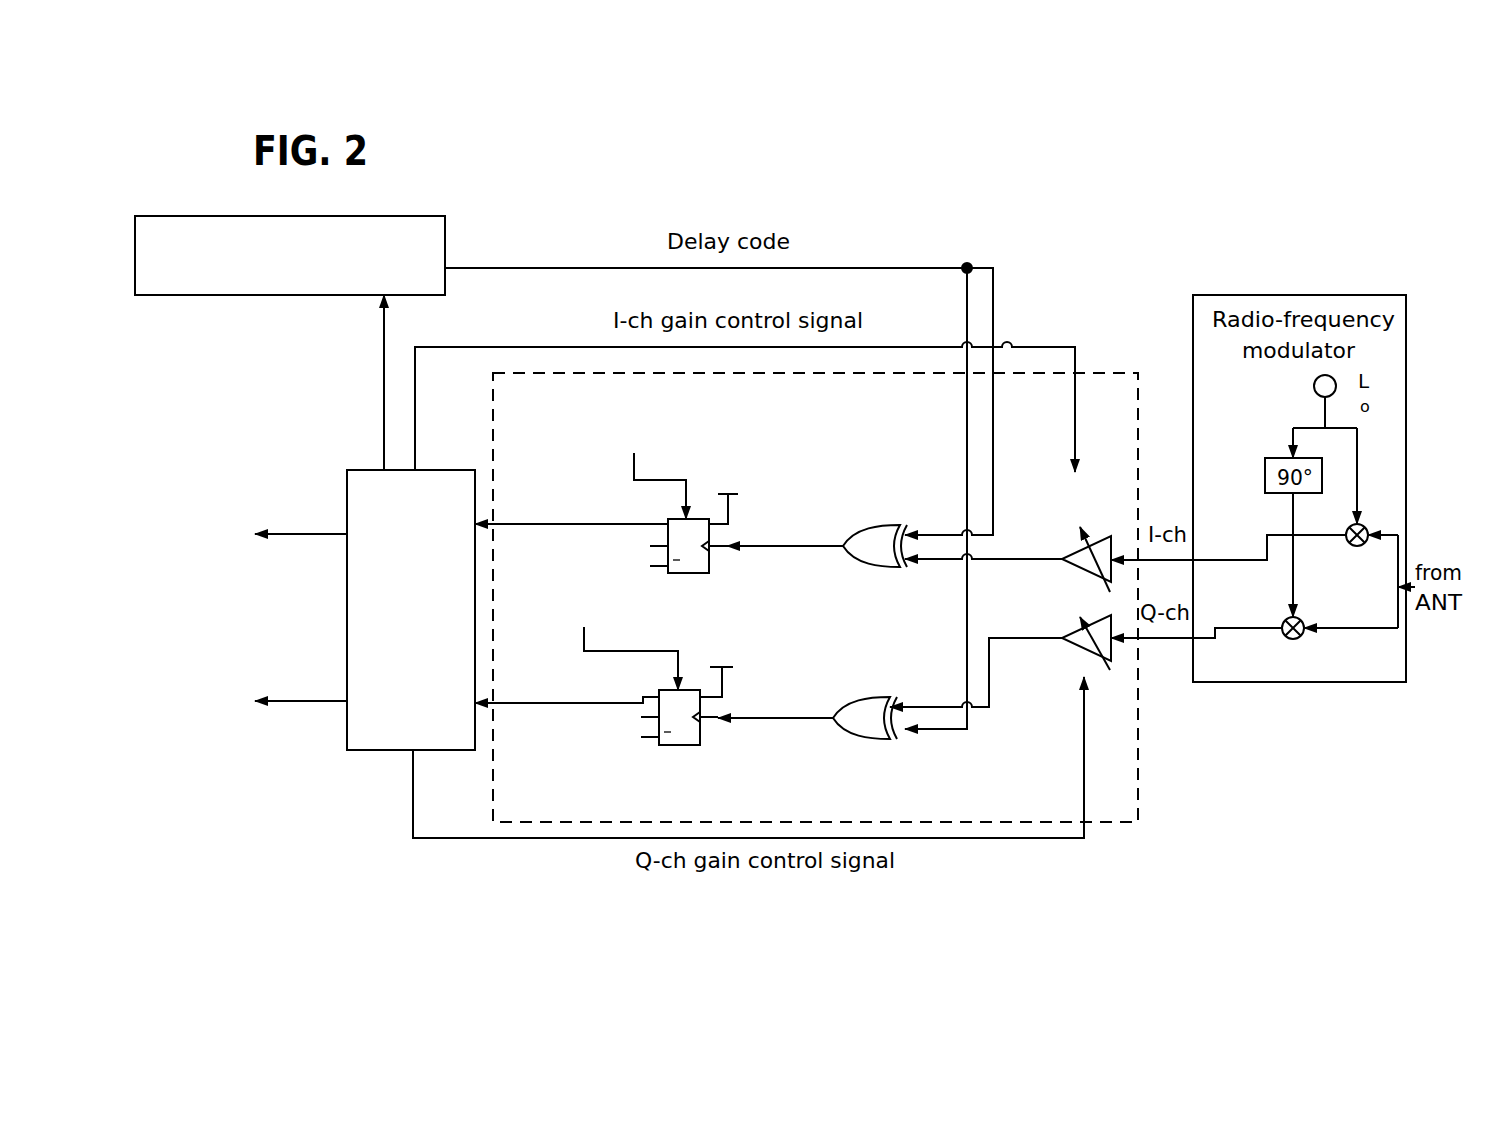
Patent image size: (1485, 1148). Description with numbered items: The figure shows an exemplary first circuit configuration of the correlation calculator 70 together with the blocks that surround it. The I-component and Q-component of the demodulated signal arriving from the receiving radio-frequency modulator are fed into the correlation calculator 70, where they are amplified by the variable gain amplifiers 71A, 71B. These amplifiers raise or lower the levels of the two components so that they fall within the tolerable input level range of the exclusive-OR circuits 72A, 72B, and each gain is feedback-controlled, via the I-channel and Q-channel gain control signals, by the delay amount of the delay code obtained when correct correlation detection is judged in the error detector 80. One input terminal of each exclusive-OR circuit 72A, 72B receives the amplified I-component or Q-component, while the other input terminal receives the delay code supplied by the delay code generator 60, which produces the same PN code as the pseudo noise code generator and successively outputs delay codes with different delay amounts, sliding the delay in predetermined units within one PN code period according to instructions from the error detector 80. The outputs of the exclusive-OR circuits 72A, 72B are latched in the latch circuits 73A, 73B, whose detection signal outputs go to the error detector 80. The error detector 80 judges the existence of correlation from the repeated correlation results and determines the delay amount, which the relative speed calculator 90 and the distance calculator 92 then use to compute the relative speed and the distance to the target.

The delay code generator 60 is at (290, 255).
The correlation calculator 70 is at (815, 597).
The variable gain amplifier 71A is at (1075, 533).
The variable gain amplifier 71B is at (1046, 623).
The exclusive-OR circuit 72A is at (873, 577).
The exclusive-OR circuit 72B is at (865, 747).
The latch circuit 73A is at (619, 524).
The latch circuit 73B is at (614, 693).
The error detector 80 is at (411, 610).
The relative speed calculator 90 is at (241, 534).
The distance calculator 92 is at (233, 702).